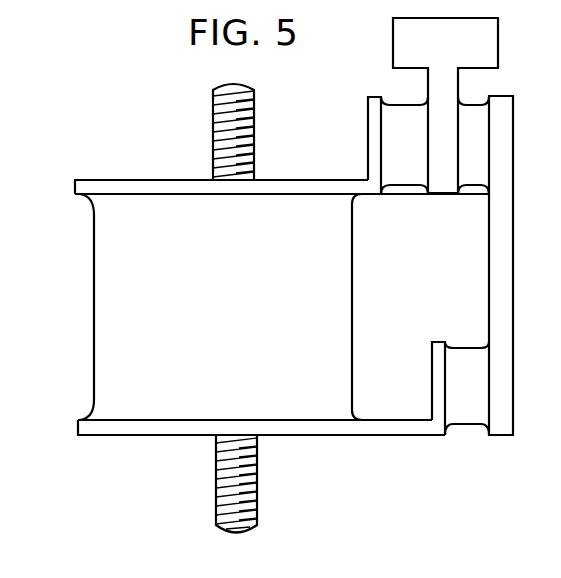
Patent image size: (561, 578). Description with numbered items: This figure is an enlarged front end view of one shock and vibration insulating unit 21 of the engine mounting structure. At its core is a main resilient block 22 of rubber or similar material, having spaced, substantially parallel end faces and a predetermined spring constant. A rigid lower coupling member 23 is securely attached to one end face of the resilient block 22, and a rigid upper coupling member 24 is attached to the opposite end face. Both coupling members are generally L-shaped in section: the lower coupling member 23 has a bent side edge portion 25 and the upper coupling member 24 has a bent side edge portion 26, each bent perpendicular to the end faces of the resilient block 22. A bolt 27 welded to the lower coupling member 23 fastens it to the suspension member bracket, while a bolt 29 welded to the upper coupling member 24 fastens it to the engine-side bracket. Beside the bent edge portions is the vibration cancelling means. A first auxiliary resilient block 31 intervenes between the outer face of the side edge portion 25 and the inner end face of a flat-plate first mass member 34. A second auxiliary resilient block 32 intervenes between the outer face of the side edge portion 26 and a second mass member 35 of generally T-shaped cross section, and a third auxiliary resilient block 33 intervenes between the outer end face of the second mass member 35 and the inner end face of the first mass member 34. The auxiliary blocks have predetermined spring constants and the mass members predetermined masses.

The shock and vibration insulating unit 21 is at (172, 138).
The main resilient block 22 is at (93, 312).
The lower coupling member 23 is at (148, 437).
The upper coupling member 24 is at (127, 178).
The bent side edge portion of lower coupling member 25 is at (431, 372).
The bent side edge portion of upper coupling member 26 is at (368, 127).
The bolt 27 is at (258, 470).
The bolt 29 is at (254, 108).
The first auxiliary resilient block 31 is at (466, 428).
The second auxiliary resilient block 32 is at (403, 186).
The third auxiliary resilient block 33 is at (475, 189).
The first mass member 34 is at (490, 272).
The second mass member 35 is at (445, 194).